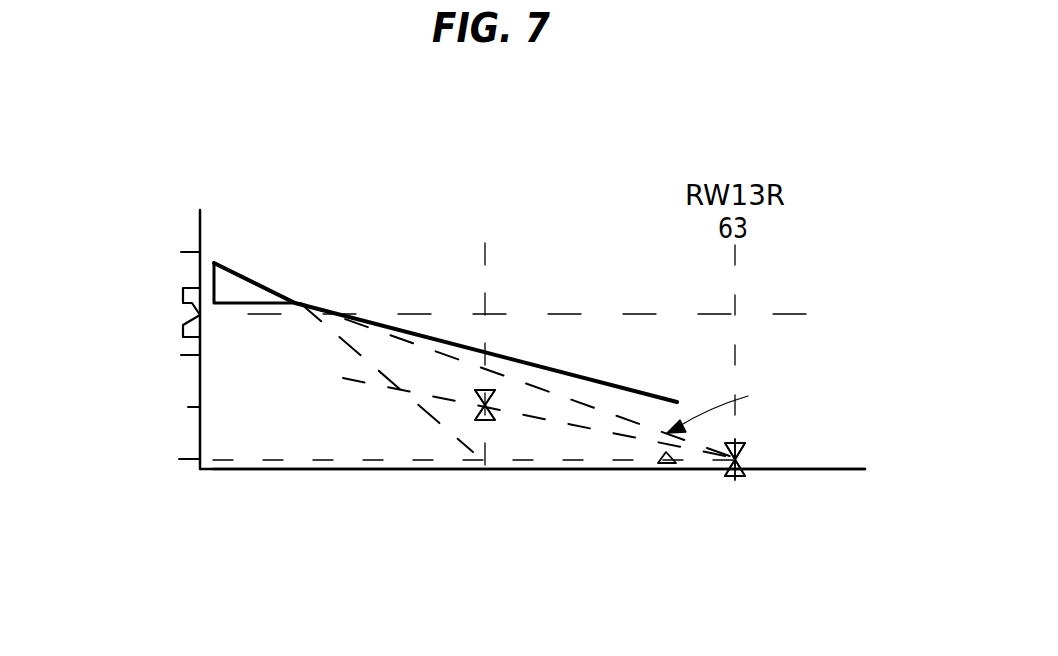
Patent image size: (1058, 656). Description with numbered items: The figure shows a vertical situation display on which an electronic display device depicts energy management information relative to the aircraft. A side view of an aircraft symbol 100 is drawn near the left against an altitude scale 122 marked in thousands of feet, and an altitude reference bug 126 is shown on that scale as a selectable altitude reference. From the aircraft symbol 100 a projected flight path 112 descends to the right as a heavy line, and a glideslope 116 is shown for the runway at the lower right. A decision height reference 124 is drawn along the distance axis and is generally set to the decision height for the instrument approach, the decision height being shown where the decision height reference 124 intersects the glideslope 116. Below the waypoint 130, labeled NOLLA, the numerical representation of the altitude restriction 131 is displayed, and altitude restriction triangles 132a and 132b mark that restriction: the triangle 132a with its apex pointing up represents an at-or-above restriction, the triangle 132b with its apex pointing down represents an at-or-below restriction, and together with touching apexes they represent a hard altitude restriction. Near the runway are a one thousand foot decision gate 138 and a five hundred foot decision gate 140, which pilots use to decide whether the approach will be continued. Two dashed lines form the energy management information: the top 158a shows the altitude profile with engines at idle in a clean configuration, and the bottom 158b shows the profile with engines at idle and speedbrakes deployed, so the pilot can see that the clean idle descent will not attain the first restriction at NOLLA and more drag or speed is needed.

The aircraft symbol 100 is at (249, 283).
The projected flight path 112 is at (641, 387).
The glideslope 116 is at (580, 427).
The altitude scale 122 is at (92, 395).
The decision height reference 124 is at (278, 461).
The altitude reference bug 126 is at (183, 325).
The waypoint 130 is at (545, 174).
The numerical representation of the altitude restriction 131 is at (440, 221).
The altitude restriction triangle 132a is at (485, 418).
The altitude restriction triangle 132b is at (485, 400).
The 1000 foot decision gate 138 is at (673, 436).
The 500 foot decision gate 140 is at (732, 403).
The top of the energy management information 158a is at (542, 384).
The bottom of the energy management information 158b is at (474, 453).